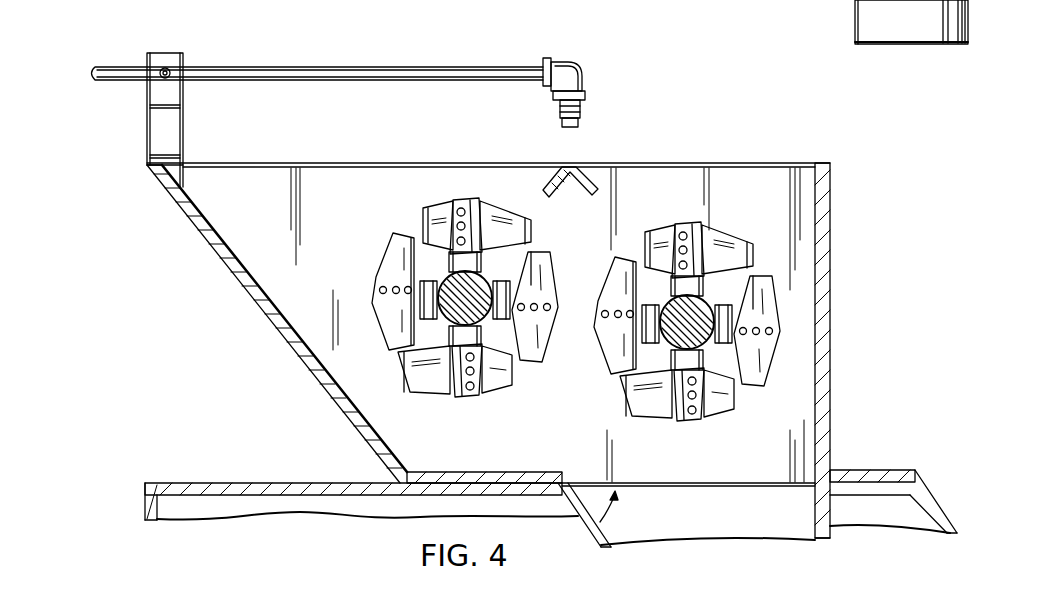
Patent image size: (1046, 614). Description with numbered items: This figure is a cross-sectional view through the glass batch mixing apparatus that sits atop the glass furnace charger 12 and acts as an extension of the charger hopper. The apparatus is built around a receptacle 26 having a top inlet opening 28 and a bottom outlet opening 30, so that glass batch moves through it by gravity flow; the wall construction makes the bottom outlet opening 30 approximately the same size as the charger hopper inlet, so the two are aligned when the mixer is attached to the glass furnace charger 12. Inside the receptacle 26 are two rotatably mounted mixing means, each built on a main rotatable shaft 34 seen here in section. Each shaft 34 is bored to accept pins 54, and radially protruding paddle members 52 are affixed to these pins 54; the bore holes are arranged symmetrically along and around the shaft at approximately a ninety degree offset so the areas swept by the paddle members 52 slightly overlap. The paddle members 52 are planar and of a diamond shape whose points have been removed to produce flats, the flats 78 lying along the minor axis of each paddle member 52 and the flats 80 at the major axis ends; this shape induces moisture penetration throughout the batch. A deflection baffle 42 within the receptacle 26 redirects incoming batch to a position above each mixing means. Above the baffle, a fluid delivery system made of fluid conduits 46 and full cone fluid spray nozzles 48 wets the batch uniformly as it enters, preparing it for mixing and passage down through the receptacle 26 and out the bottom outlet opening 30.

The glass furnace charger 12 is at (145, 492).
The receptacle 26 is at (312, 371).
The top inlet opening 28 is at (706, 158).
The bottom outlet opening 30 is at (594, 527).
The rotatable shaft 34 is at (478, 322).
The deflection baffle 42 is at (577, 167).
The fluid conduit 46 is at (350, 67).
The full cone fluid spray nozzle 48 is at (580, 117).
The paddle member 52 is at (540, 336).
The pin 54 is at (472, 210).
The flat 78 is at (398, 242).
The flat 80 is at (525, 232).